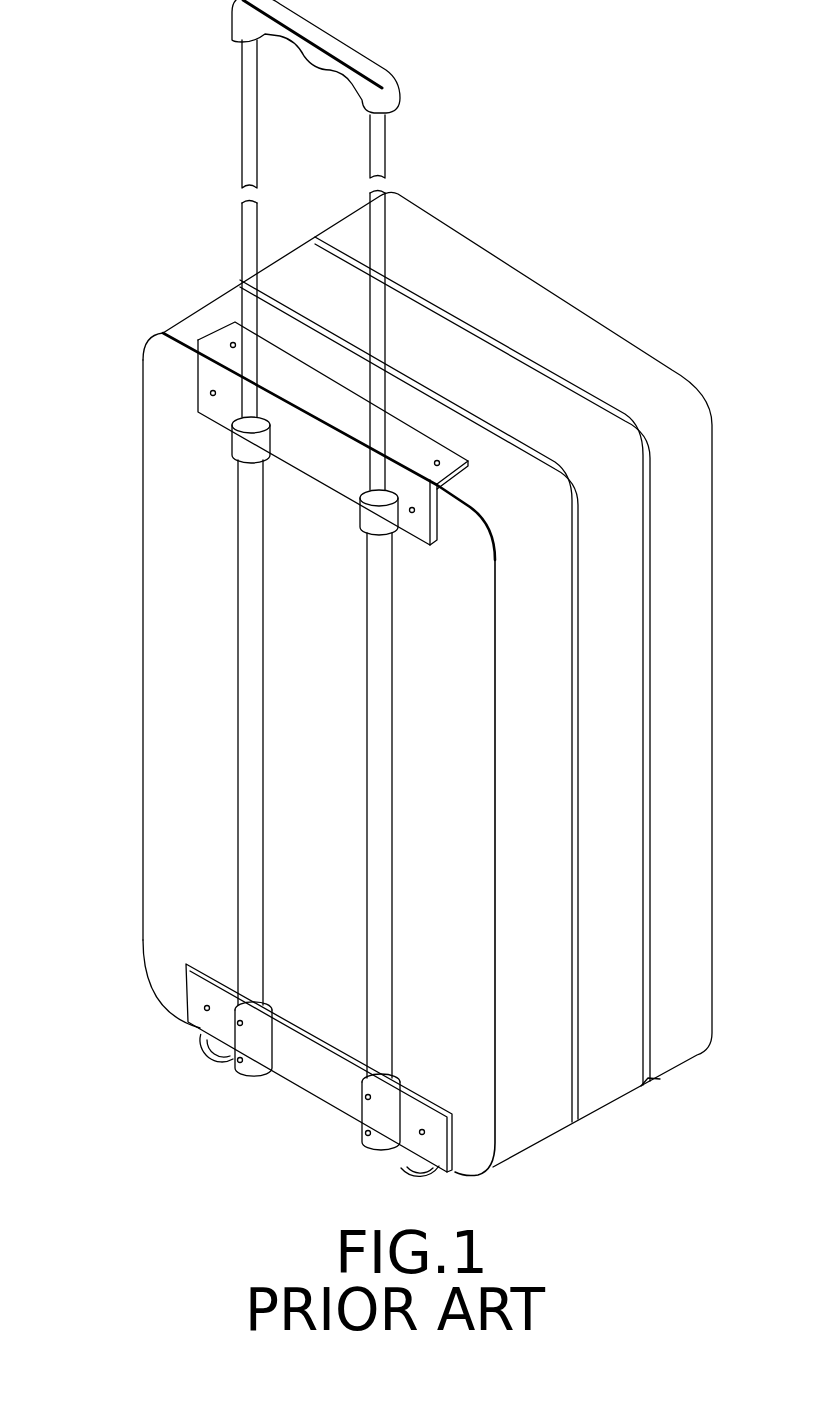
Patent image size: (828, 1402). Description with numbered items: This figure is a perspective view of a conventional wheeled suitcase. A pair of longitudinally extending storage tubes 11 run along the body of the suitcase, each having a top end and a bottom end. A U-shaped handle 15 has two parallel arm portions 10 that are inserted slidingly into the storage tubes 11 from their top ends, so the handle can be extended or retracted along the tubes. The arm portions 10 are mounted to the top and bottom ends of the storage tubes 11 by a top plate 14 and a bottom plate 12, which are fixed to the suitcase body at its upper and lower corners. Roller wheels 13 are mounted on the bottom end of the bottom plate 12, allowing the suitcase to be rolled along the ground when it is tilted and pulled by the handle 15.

The arm portions 10 is at (380, 465).
The storage tubes 11 is at (375, 765).
The bottom plate 12 is at (330, 1088).
The roller wheels 13 is at (215, 1050).
The top plate 14 is at (405, 445).
The U-shaped handle 15 is at (335, 40).